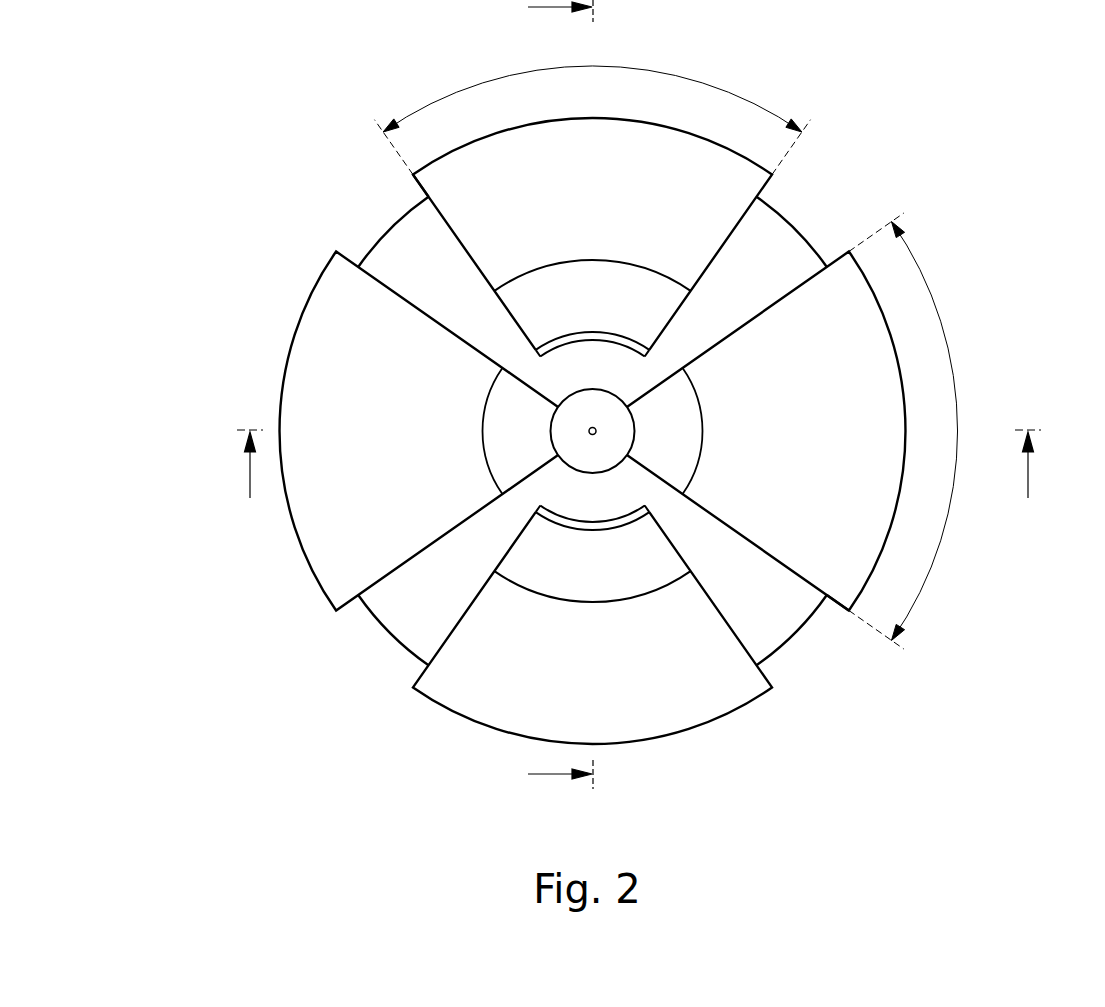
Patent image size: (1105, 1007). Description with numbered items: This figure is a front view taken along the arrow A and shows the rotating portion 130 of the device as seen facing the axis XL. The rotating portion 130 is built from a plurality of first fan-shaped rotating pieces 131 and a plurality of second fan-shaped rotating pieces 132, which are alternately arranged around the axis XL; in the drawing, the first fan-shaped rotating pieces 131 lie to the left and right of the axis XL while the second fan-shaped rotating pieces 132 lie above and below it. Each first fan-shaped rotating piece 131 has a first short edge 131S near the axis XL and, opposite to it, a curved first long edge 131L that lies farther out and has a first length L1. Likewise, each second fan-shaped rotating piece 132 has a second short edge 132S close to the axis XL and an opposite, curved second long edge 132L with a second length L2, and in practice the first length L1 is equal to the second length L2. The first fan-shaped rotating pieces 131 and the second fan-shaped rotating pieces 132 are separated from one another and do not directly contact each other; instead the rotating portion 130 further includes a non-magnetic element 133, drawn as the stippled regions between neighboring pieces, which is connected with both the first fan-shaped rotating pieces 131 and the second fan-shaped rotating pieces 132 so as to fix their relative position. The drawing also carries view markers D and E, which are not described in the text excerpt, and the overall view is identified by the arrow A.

The rotating portion 130 is at (470, 431).
The first fan-shaped rotating piece 131 is at (858, 277).
The second fan-shaped rotating piece 132 is at (453, 152).
The non-magnetic element 133 is at (411, 616).
The first long edge 131L is at (862, 596).
The second long edge 132L is at (418, 168).
The first short edge 131S is at (627, 447).
The second short edge 132S is at (557, 353).
The axis XL is at (589, 431).
The first length L1 is at (920, 431).
The second length L2 is at (593, 103).
The viewing direction D is at (639, 481).
The section line E is at (546, 396).
The arrow A is at (1102, 57).